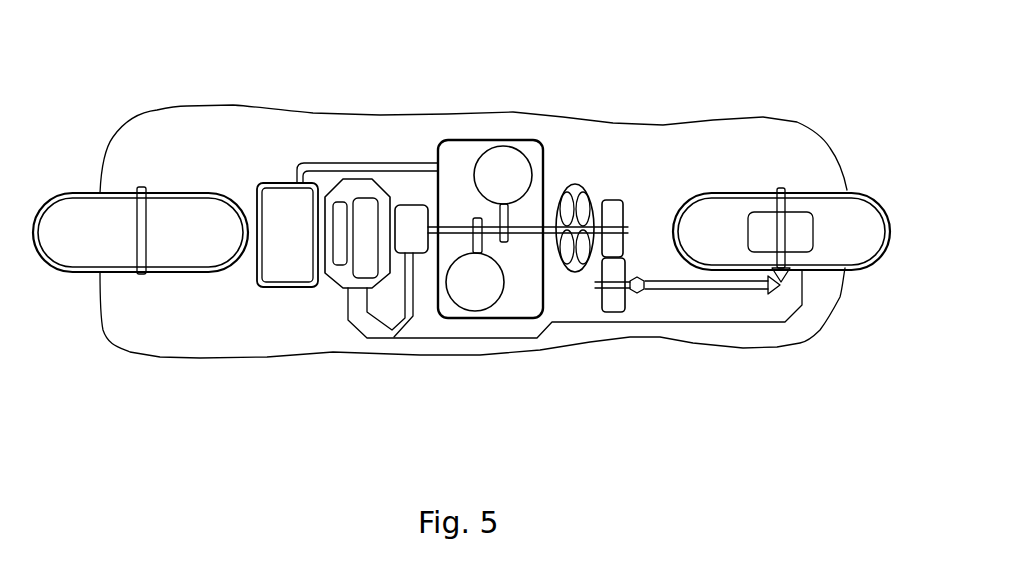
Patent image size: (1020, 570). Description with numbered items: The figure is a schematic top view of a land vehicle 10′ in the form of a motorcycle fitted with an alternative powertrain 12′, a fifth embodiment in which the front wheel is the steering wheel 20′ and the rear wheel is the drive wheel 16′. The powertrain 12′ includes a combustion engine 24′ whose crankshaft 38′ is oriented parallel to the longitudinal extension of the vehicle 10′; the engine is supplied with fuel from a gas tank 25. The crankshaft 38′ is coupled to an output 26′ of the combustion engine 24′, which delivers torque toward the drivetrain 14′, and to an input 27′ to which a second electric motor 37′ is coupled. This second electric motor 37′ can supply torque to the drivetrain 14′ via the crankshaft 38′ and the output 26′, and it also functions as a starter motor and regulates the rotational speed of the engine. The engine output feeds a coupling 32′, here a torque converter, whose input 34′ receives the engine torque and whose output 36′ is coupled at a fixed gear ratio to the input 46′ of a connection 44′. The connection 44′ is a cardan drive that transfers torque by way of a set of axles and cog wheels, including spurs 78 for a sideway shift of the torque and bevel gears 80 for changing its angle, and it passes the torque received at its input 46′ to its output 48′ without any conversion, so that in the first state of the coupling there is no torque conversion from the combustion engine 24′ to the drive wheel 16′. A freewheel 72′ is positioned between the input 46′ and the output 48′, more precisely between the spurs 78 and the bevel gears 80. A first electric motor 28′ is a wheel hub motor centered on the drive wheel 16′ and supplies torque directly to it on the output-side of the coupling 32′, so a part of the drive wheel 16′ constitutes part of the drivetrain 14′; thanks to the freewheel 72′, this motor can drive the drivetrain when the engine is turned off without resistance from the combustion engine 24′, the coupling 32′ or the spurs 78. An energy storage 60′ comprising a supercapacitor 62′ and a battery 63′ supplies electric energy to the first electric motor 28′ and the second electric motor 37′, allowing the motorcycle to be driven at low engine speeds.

The land vehicle 10′ is at (262, 82).
The powertrain 12′ is at (415, 132).
The drivetrain 14′ is at (728, 312).
The drive wheel 16′ is at (870, 270).
The steering wheel 20′ is at (55, 273).
The combustion engine 24′ is at (463, 323).
The gas tank 25 is at (285, 287).
The output of combustion engine 26′ is at (517, 232).
The input of combustion engine 27′ is at (457, 230).
The first electric motor 28′ is at (786, 192).
The coupling 32′ is at (580, 182).
The input of coupling 34′ is at (556, 215).
The output of coupling 36′ is at (605, 200).
The second electric motor 37′ is at (405, 256).
The crankshaft 38′ is at (452, 233).
The connection 44′ is at (697, 296).
The input of connection 46′ is at (622, 236).
The output of connection 48′ is at (848, 270).
The energy storage 60′ is at (346, 289).
The supercapacitor 62′ is at (340, 285).
The battery 63′ is at (337, 266).
The freewheel 72′ is at (638, 293).
The spurs 78 is at (637, 250).
The bevel gears 80 is at (785, 291).